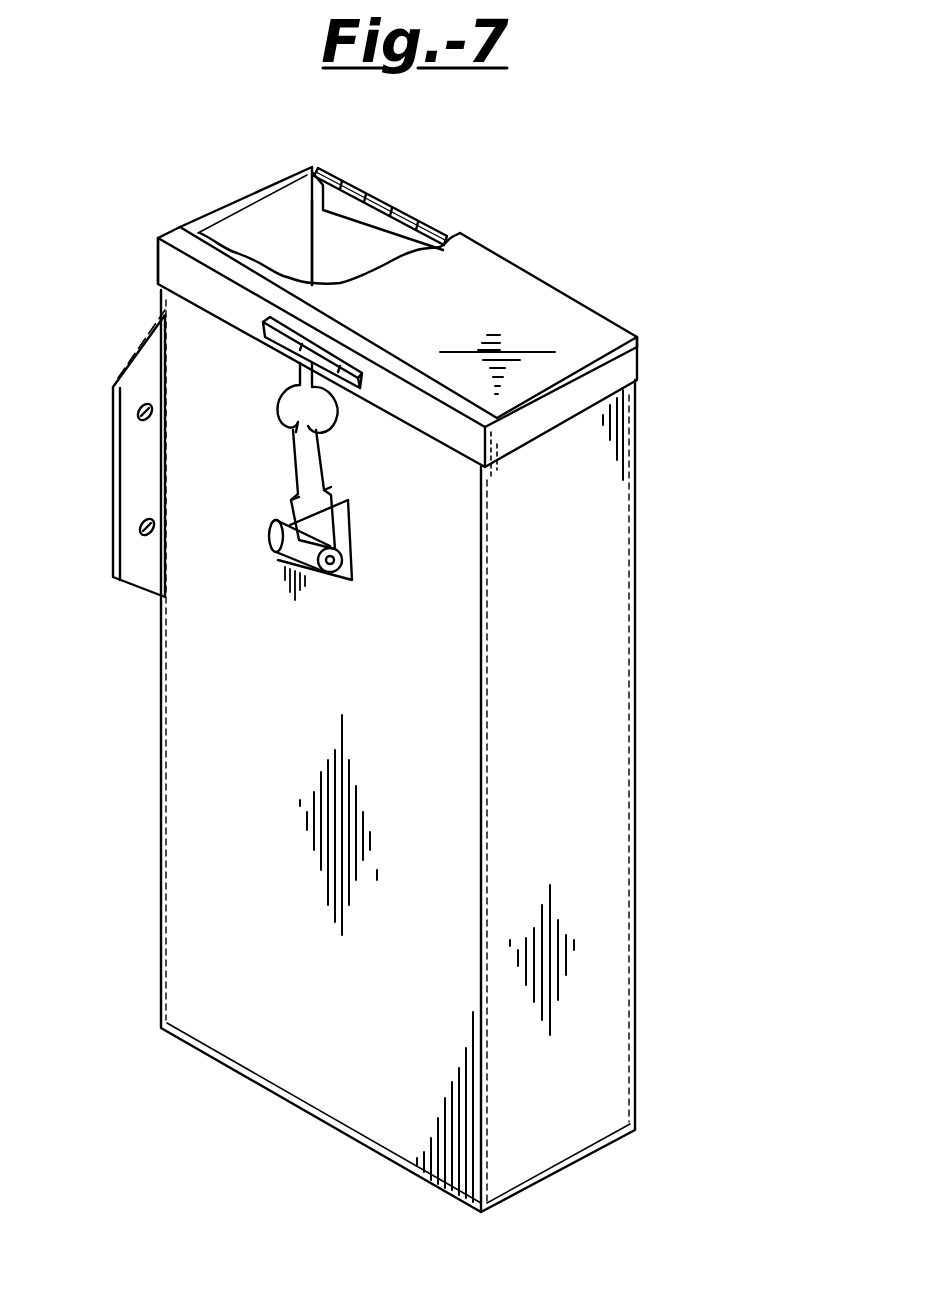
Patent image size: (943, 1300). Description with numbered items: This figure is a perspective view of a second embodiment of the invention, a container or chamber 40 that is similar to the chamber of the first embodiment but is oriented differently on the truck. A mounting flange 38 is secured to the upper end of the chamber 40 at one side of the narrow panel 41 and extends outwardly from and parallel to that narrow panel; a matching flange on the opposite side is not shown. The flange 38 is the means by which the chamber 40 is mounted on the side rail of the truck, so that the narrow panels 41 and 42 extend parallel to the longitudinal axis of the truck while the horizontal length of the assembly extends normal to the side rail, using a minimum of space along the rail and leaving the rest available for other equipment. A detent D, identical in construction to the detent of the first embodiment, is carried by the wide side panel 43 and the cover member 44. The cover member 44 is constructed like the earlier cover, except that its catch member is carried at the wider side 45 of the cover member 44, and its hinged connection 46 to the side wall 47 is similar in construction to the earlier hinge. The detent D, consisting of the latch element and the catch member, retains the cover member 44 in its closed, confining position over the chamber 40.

The mounting flange 38 is at (135, 472).
The chamber 40 is at (393, 624).
The narrow panel 41 is at (248, 228).
The narrow panel 42 is at (607, 768).
The wide side panel 43 is at (187, 883).
The cover member 44 is at (550, 303).
The wider side of the cover 45 is at (232, 305).
The hinged connection 46 is at (395, 184).
The side wall 47 is at (320, 232).
The detent D is at (291, 455).